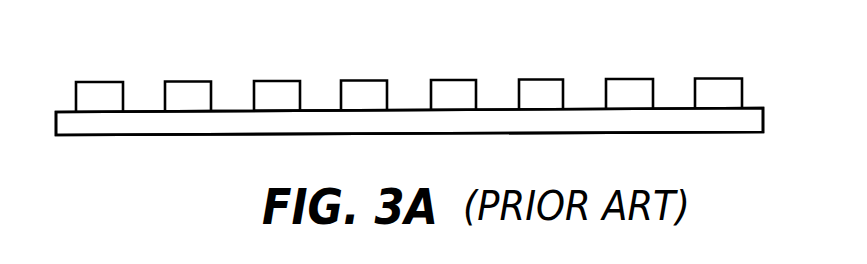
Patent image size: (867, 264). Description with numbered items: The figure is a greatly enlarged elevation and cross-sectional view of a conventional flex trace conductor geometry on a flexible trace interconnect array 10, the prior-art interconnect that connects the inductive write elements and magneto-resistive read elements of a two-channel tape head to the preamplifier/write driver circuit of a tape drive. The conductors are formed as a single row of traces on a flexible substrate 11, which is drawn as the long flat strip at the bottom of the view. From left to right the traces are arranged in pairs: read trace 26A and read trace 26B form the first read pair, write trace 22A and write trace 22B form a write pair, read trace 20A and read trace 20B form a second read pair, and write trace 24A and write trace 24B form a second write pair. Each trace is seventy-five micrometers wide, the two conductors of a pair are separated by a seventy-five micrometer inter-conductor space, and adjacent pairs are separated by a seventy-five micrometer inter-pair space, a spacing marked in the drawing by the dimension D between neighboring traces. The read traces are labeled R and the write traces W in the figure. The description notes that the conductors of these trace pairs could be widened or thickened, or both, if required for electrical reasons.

The flexible trace interconnect array 10 is at (110, 138).
The flexible substrate 11 is at (127, 127).
The read trace 26A is at (91, 82).
The read trace 26B is at (180, 82).
The write trace 22A is at (290, 81).
The write trace 22B is at (378, 80).
The read trace 20A is at (468, 80).
The read trace 20B is at (557, 80).
The write trace 24A is at (640, 79).
The write trace 24B is at (724, 78).
The spacing distance D is at (185, 41).